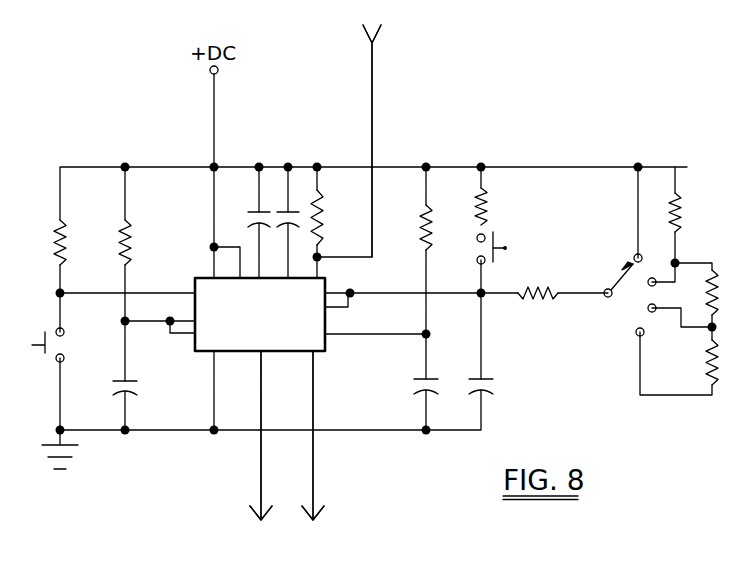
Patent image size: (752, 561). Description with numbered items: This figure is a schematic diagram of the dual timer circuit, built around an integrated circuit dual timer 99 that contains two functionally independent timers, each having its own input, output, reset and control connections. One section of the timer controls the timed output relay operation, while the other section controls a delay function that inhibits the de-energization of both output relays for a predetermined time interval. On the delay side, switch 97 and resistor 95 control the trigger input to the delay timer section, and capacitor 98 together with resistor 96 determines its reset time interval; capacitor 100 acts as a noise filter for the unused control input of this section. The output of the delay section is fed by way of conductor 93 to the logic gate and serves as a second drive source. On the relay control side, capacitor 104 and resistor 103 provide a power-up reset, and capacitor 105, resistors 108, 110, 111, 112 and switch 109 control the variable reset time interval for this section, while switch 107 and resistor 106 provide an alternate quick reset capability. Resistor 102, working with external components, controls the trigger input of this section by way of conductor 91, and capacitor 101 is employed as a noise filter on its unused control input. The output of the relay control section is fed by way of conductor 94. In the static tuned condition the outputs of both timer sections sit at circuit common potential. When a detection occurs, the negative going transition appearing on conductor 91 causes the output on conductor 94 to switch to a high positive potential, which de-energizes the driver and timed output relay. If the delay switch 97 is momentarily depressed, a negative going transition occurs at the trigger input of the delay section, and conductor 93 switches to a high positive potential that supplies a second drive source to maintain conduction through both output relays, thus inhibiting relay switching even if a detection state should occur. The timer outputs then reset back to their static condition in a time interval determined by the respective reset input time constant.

The conductor 91 is at (386, 141).
The conductor 93 is at (259, 453).
The conductor 94 is at (311, 451).
The resistor 95 is at (38, 242).
The resistor 96 is at (140, 242).
The switch 97 is at (38, 352).
The capacitor 98 is at (140, 388).
The integrated circuit dual timer 99 is at (260, 314).
The capacitor 100 is at (246, 209).
The capacitor 101 is at (283, 235).
The resistor 102 is at (340, 217).
The resistor 103 is at (410, 227).
The capacitor 104 is at (406, 389).
The capacitor 105 is at (504, 389).
The resistor 106 is at (504, 206).
The switch 107 is at (508, 243).
The resistor 108 is at (541, 308).
The switch 109 is at (627, 295).
The resistor 110 is at (729, 362).
The resistor 111 is at (729, 292).
The resistor 112 is at (696, 212).